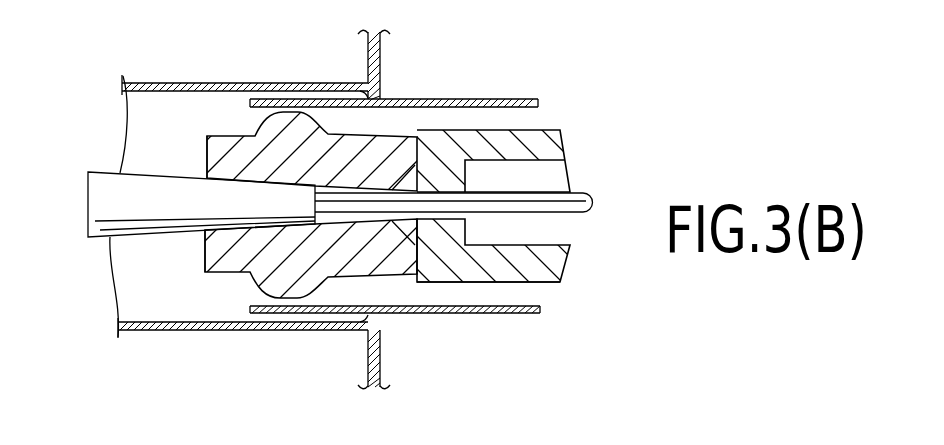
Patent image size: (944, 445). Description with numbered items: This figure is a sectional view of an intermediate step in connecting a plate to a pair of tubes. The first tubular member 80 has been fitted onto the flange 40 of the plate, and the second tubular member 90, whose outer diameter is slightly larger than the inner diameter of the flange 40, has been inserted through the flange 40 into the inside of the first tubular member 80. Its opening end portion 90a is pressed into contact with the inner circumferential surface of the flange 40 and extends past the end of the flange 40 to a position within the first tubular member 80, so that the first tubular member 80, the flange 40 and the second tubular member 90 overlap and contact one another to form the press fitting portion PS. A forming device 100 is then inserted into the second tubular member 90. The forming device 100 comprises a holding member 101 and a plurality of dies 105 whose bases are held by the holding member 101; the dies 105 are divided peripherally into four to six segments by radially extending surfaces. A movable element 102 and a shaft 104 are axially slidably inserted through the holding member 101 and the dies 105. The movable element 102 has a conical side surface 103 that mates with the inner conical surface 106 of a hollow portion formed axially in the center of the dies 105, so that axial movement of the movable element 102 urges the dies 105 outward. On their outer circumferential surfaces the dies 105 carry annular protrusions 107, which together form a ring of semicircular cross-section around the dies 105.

The first tubular member 80 is at (173, 331).
The second tubular member 90 is at (477, 312).
The opening end portion 90a is at (252, 313).
The flange 40 is at (383, 347).
The press fitting portion PS is at (345, 332).
The forming device 100 is at (552, 285).
The holding member 101 is at (534, 146).
The movable element 102 is at (108, 182).
The conical side surface 103 is at (148, 236).
The shaft 104 is at (586, 197).
The dies 105 is at (390, 152).
The inner conical surface 106 is at (202, 174).
The annular protrusions 107 is at (256, 134).